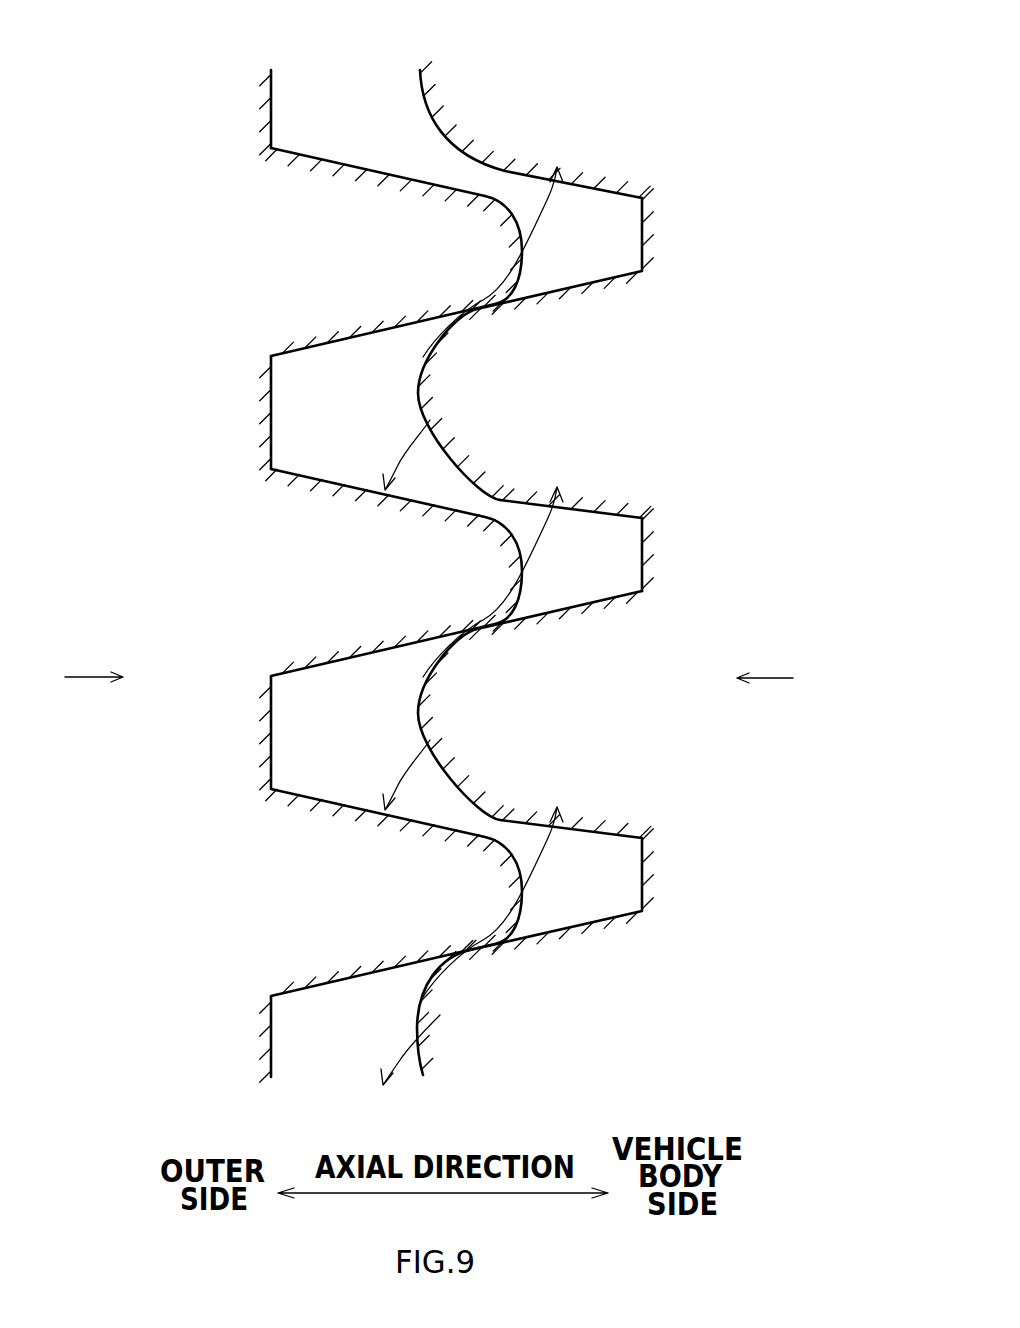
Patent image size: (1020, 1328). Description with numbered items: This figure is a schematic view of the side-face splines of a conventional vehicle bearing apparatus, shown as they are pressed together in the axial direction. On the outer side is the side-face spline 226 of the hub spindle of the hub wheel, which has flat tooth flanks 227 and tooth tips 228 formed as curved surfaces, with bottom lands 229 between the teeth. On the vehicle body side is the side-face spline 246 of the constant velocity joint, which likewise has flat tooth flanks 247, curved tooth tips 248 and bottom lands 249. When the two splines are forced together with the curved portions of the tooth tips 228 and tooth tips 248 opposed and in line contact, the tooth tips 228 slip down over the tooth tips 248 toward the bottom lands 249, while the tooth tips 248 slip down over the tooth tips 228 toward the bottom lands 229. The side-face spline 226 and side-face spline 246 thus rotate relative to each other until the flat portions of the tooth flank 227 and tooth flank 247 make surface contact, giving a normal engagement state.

The side-face spline 226 is at (303, 590).
The tooth flank 227 is at (355, 165).
The tooth tip 228 is at (536, 257).
The bottom land 229 is at (271, 422).
The side-face spline 246 is at (770, 590).
The tooth flank 247 is at (606, 188).
The tooth tip 248 is at (404, 400).
The bottom land 249 is at (642, 547).